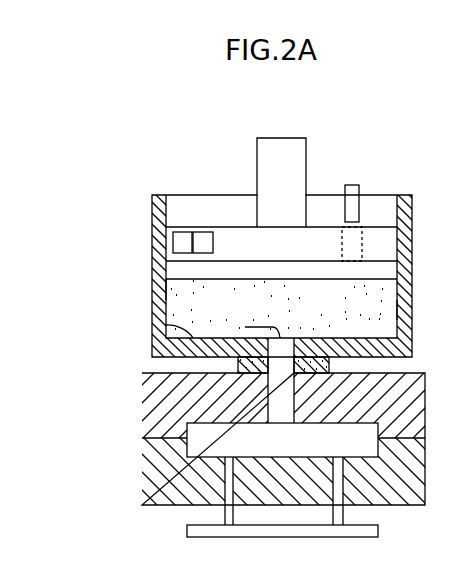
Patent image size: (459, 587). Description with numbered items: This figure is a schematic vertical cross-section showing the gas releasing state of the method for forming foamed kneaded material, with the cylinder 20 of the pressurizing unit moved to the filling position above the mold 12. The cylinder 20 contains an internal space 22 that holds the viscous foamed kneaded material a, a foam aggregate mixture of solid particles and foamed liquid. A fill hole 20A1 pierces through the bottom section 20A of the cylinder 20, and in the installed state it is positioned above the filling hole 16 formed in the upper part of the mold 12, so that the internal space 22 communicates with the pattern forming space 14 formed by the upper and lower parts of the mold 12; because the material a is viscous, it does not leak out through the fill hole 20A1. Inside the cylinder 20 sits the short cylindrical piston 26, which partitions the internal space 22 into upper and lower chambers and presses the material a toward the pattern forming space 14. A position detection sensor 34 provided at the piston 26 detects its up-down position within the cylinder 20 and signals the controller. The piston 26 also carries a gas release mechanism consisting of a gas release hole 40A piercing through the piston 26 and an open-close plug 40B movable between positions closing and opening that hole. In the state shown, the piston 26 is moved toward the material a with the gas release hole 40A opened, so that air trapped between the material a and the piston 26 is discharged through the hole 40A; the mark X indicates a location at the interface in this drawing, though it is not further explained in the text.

The cylinder 20 is at (148, 233).
The piston 26 is at (205, 226).
The position detection sensor 34 is at (214, 240).
The open-close plug 40B is at (345, 203).
The gas release hole 40A is at (360, 228).
The interface position X is at (166, 300).
The bottom section 20A is at (172, 329).
The fill hole 20A1 is at (245, 327).
The internal space 22 is at (333, 310).
The foamed kneaded material a is at (387, 315).
The mold 12 is at (127, 427).
The filling hole 16 is at (263, 388).
The pattern forming space 14 is at (300, 451).